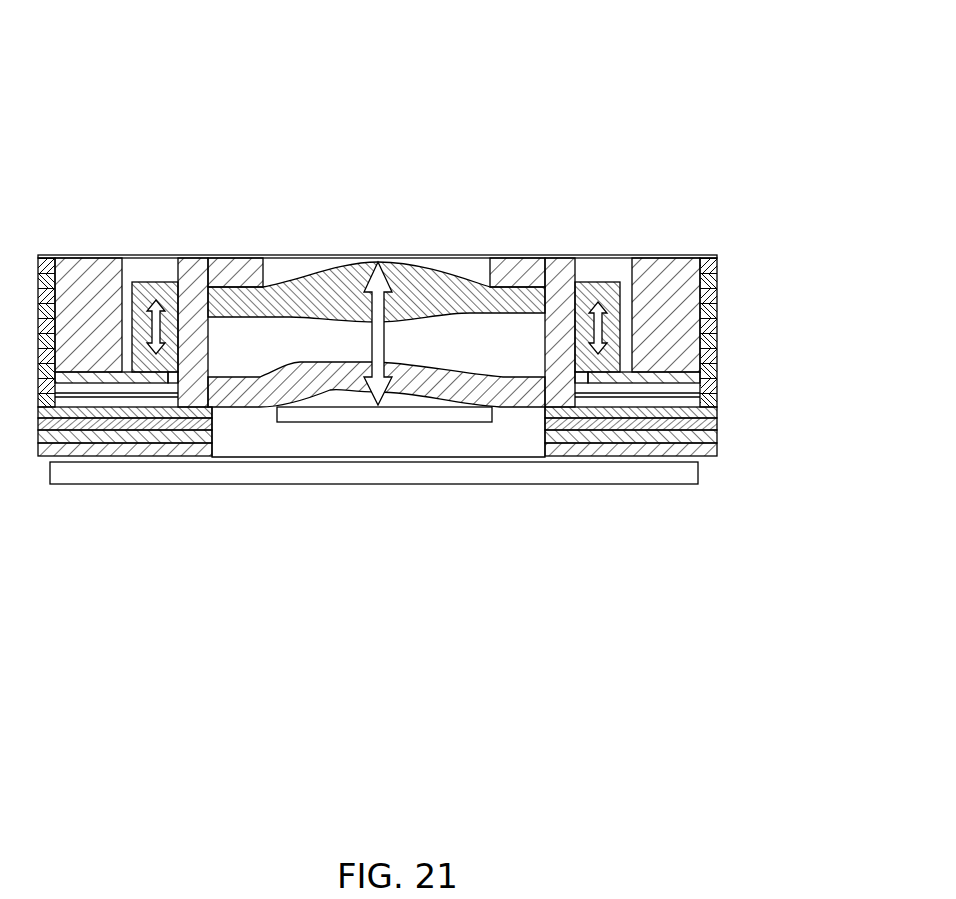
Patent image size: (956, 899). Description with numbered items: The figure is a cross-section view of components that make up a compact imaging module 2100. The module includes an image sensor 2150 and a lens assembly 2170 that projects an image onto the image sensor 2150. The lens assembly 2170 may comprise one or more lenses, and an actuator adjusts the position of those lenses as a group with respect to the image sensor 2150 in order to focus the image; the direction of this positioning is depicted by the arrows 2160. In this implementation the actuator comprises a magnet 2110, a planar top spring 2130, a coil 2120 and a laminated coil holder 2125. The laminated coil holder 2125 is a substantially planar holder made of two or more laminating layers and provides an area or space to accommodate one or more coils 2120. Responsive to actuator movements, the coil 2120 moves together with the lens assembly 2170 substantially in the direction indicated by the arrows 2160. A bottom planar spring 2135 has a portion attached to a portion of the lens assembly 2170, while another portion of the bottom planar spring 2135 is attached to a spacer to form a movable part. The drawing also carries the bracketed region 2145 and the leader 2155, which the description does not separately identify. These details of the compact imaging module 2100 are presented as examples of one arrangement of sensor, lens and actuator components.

The compact imaging module 2100 is at (298, 38).
The magnet 2110 is at (603, 281).
The coil 2120 is at (704, 327).
The laminated coil holder 2125 is at (724, 256).
The planar top spring 2130 is at (672, 253).
The bottom planar spring 2135 is at (660, 408).
The circuit board stack 2145 is at (728, 408).
The image sensor 2150 is at (298, 485).
The lens barrel 2155 is at (209, 385).
The arrow 2160 is at (153, 300).
The lens assembly 2170 is at (325, 275).